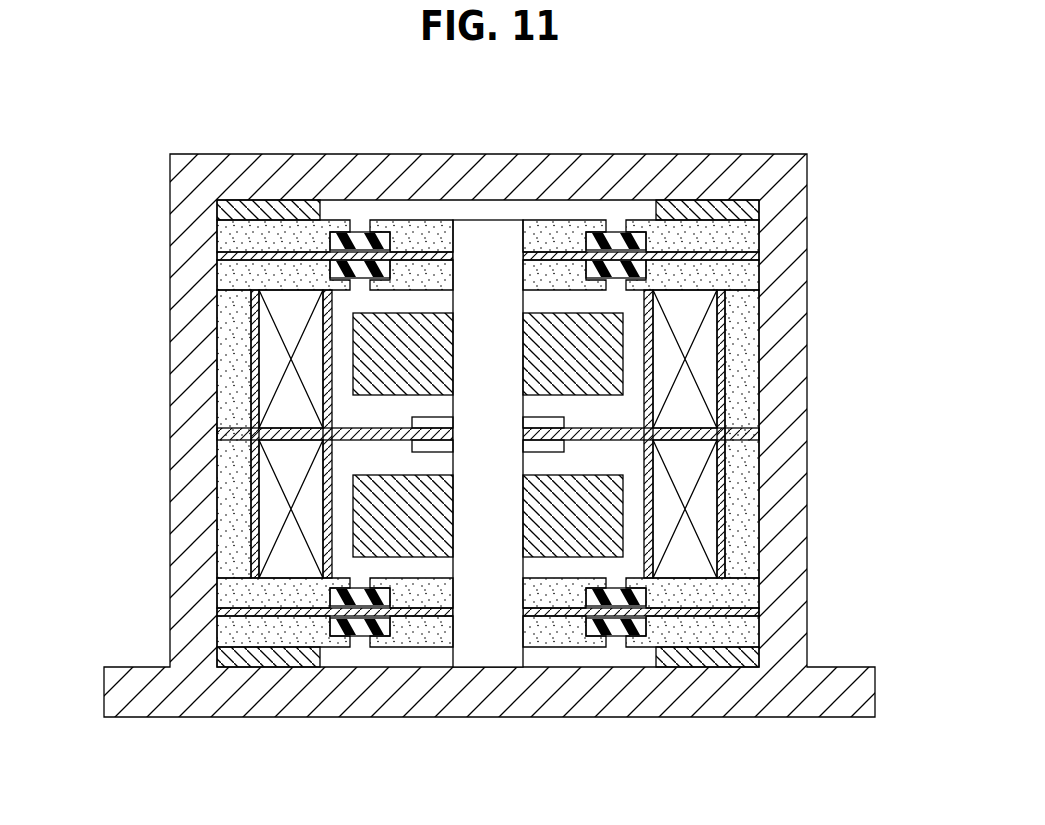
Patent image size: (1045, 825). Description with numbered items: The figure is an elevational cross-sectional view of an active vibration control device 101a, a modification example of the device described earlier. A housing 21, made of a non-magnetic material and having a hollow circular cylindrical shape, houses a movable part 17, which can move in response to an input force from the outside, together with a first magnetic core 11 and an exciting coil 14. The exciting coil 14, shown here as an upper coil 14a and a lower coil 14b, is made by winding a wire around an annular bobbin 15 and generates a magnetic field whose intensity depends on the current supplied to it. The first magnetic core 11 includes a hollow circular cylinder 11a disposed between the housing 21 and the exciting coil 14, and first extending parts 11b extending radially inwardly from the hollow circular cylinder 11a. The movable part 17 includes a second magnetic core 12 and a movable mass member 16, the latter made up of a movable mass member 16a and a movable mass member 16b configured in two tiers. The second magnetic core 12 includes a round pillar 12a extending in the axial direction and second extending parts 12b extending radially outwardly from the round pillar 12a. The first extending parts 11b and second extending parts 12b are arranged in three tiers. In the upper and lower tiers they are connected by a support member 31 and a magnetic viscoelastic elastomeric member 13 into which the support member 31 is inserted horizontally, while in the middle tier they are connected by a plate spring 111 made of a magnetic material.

The active vibration control device 101a is at (518, 384).
The first magnetic core 11 is at (578, 491).
The hollow circular cylinder 11a is at (742, 313).
The first extending part 11b is at (705, 275).
The second magnetic core 12 is at (490, 410).
The round pillar 12a is at (487, 237).
The second extending part 12b is at (547, 230).
The magnetic viscoelastic elastomeric member 13 is at (357, 235).
The exciting coil 14 is at (490, 434).
The exciting coil 14a is at (273, 337).
The exciting coil 14b is at (491, 509).
The bobbin 15 is at (250, 312).
The movable mass member 16 is at (561, 307).
The movable mass member 16a is at (605, 337).
The movable mass member 16b is at (600, 487).
The movable part 17 is at (445, 218).
The housing 21 is at (170, 203).
The support member 31 is at (293, 250).
The plate spring 111 is at (390, 433).